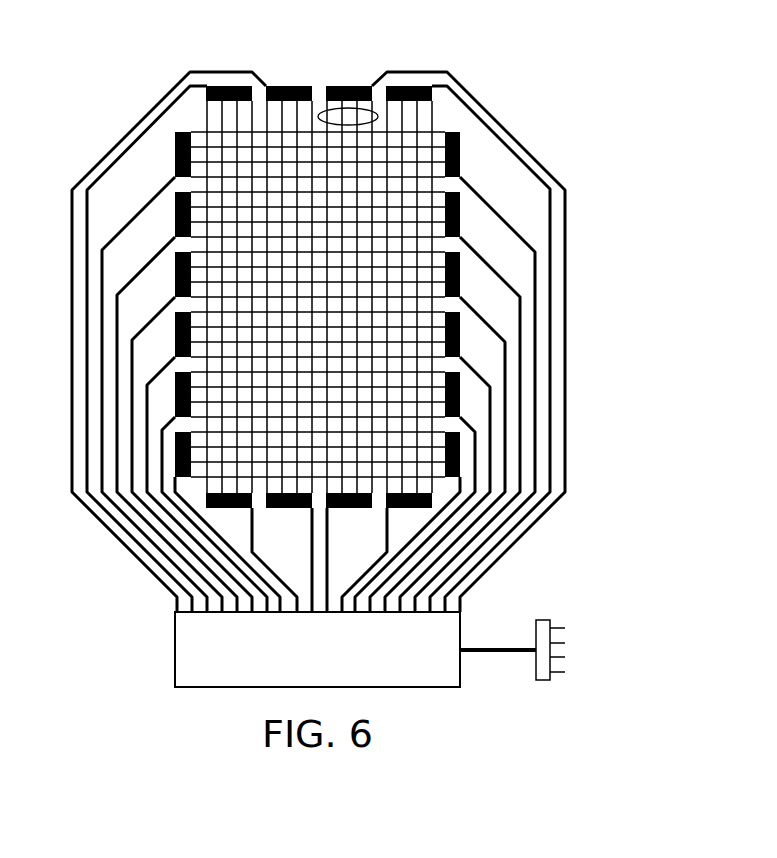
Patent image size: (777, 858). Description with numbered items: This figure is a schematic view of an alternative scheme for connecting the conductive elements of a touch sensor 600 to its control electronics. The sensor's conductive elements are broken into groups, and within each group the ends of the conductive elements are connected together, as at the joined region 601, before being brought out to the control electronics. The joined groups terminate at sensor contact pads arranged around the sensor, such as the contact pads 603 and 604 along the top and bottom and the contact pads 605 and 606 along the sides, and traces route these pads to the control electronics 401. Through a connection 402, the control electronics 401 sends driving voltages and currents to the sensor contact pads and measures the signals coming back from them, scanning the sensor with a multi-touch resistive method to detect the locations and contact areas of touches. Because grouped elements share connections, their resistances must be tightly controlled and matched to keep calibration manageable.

The touch sensor panel 600 is at (113, 23).
The electrode crossing (sensing node) 601 is at (297, 78).
The column electrode pad 603 is at (294, 52).
The column electrode pad 604 is at (461, 521).
The row electrode pad 605 is at (114, 142).
The row electrode pad 606 is at (521, 142).
The control electronics 401 is at (365, 662).
The connector 402 is at (551, 634).